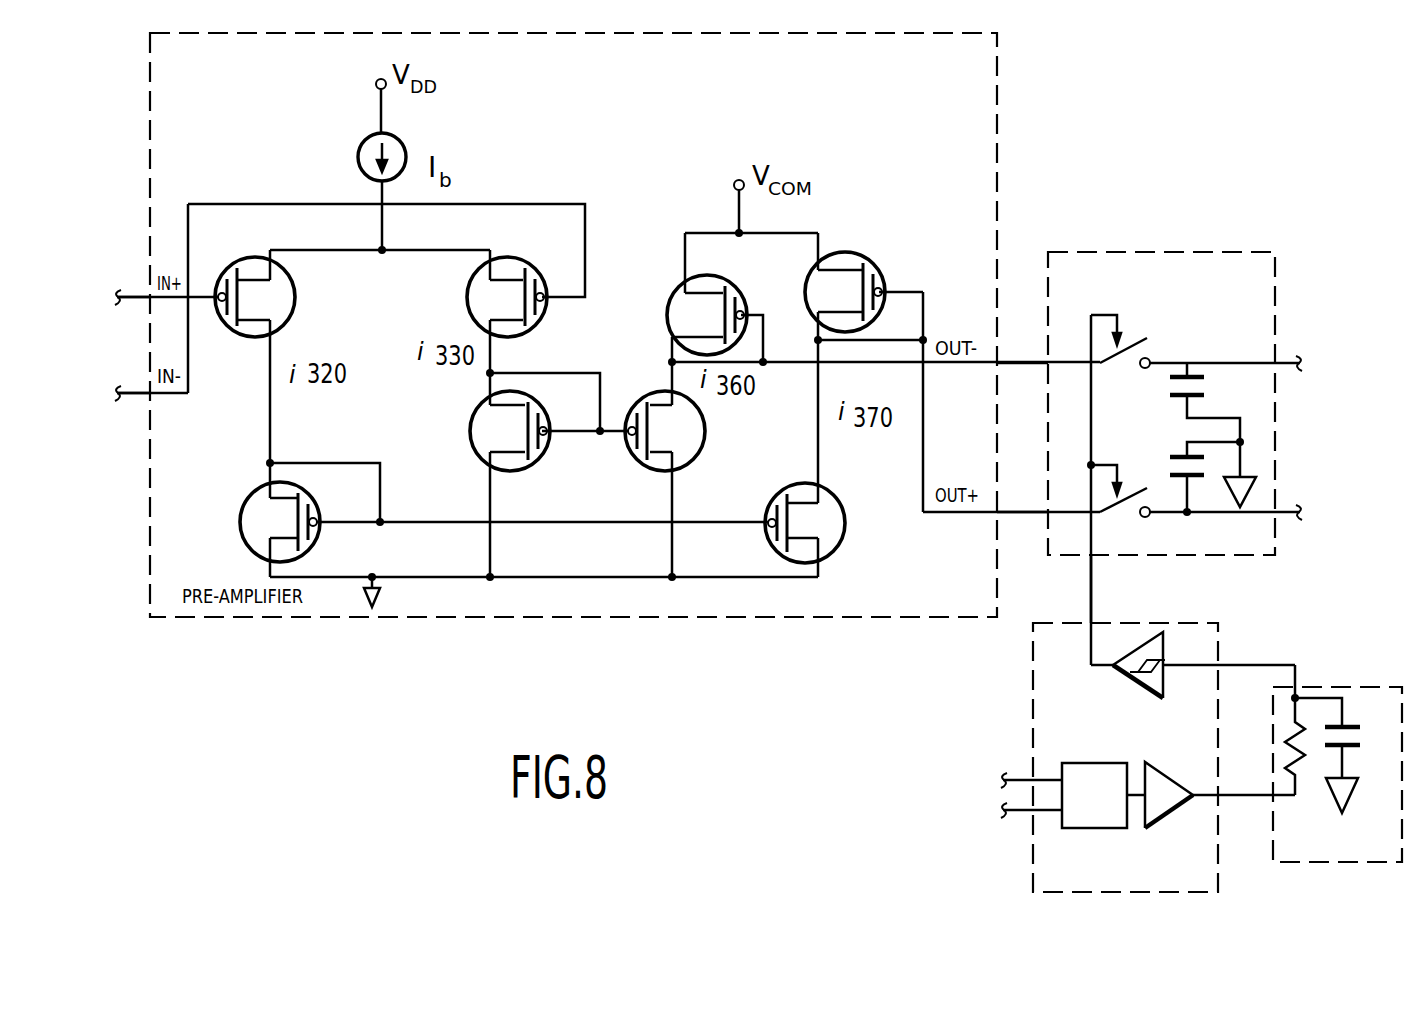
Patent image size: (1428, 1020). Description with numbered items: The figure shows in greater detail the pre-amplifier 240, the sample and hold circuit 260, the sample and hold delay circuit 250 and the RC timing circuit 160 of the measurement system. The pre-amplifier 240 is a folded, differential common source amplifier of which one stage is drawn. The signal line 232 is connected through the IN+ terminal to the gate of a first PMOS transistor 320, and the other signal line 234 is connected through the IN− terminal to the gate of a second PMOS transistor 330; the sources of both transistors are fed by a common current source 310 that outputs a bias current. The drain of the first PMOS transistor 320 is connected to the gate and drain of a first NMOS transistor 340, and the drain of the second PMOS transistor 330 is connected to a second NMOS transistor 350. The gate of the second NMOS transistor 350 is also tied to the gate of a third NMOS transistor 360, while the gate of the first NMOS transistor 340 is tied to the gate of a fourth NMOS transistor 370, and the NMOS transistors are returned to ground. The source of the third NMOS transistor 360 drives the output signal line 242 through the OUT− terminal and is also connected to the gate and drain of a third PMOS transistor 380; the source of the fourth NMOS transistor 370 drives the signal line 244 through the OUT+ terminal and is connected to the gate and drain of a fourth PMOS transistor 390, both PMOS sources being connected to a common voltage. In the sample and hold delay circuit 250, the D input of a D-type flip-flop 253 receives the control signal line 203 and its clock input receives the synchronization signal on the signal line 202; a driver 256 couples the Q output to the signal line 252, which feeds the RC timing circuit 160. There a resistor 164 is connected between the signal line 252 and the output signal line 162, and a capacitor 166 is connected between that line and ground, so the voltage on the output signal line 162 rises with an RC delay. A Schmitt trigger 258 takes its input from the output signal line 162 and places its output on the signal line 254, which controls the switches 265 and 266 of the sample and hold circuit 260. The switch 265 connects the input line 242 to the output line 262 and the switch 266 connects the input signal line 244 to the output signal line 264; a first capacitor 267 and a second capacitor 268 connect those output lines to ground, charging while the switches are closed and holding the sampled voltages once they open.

The common current source 310 is at (405, 148).
The first PMOS transistor 320 is at (296, 292).
The second PMOS transistor 330 is at (468, 303).
The first NMOS transistor 340 is at (248, 497).
The second NMOS transistor 350 is at (470, 429).
The third NMOS transistor 360 is at (705, 452).
The fourth NMOS transistor 370 is at (768, 503).
The third PMOS transistor 380 is at (679, 288).
The fourth PMOS transistor 390 is at (807, 282).
The pre-amplifier 240 is at (427, 610).
The signal line 232 is at (125, 294).
The signal line 234 is at (117, 394).
The output signal line 242 is at (1003, 364).
The signal line 244 is at (1005, 513).
The sample and hold circuit 260 is at (1182, 300).
The switch 265 is at (1100, 367).
The switch 266 is at (1113, 513).
The first capacitor 267 is at (1202, 370).
The second capacitor 268 is at (1193, 480).
The output line 262 is at (1300, 362).
The output signal line 264 is at (1300, 512).
The signal line 254 is at (1092, 603).
The sample and hold delay circuit 250 is at (1215, 864).
The D-type flip-flop 253 is at (1078, 763).
The driver 256 is at (1176, 770).
The Schmitt trigger 258 is at (1127, 682).
The signal line 252 is at (1228, 797).
The control signal line 203 is at (1003, 778).
The signal line 202 is at (1003, 812).
The RC timing circuit 160 is at (1398, 853).
The output signal line 162 is at (1285, 668).
The resistor 164 is at (1300, 718).
The capacitor 166 is at (1348, 724).